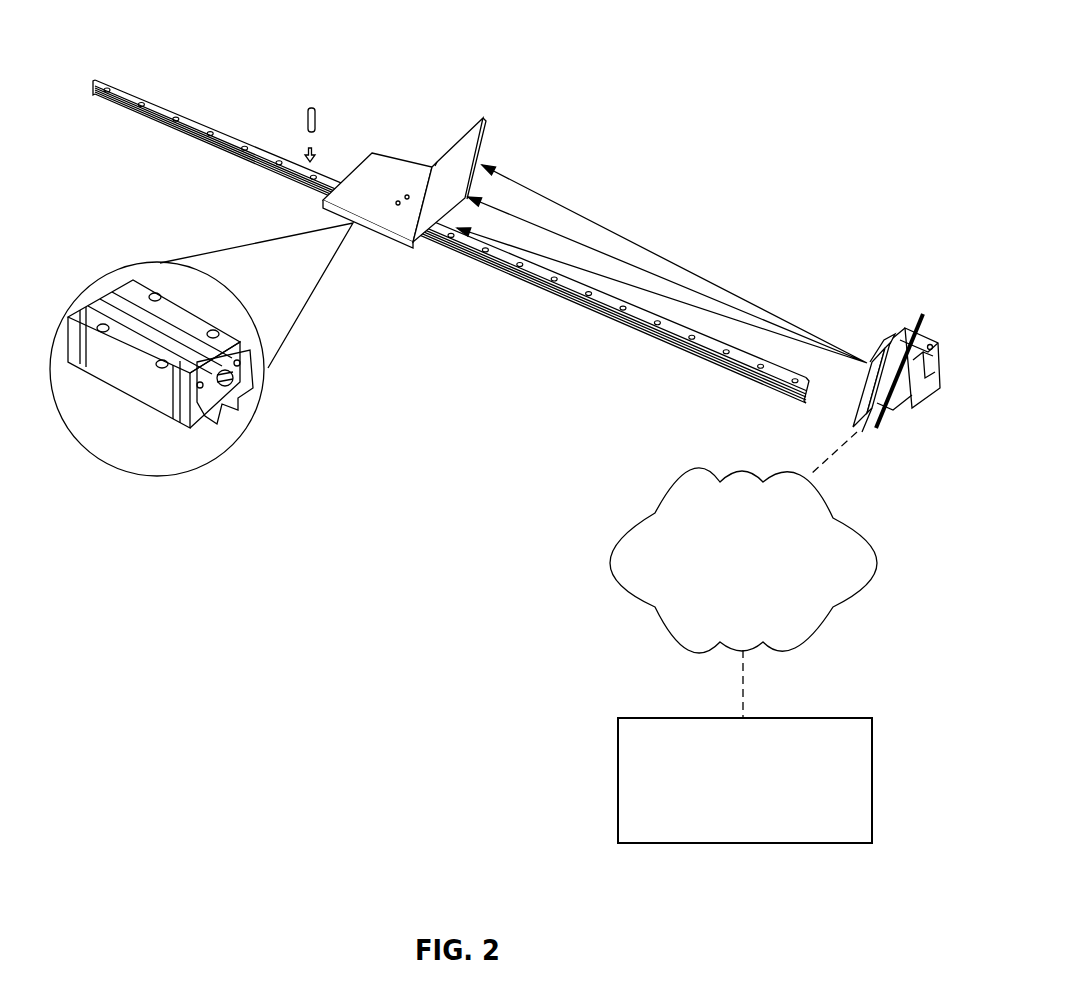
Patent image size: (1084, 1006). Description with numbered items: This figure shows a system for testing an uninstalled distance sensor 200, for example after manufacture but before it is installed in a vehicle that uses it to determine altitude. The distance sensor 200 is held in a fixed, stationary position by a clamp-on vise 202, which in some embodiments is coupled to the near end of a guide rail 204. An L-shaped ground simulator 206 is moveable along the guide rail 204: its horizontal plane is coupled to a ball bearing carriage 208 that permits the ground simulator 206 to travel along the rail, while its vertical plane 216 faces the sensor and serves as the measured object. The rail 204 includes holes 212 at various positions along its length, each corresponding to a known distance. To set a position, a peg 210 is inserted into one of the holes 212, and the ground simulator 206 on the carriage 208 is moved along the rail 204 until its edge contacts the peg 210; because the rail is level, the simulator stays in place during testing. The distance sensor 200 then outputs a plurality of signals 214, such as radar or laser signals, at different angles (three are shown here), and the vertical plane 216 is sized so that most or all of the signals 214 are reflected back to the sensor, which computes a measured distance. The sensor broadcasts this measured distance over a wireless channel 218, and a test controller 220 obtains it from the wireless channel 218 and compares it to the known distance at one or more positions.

The distance sensor 200 is at (898, 332).
The clamp-on vise 202 is at (921, 398).
The guide rail 204 is at (152, 107).
The L-shaped ground simulator 206 is at (397, 241).
The carriage 208 is at (102, 286).
The peg 210 is at (311, 107).
The holes 212 is at (316, 176).
The signals 214 is at (584, 215).
The vertical plane 216 is at (480, 136).
The wireless channel 218 is at (743, 472).
The test controller 220 is at (690, 718).